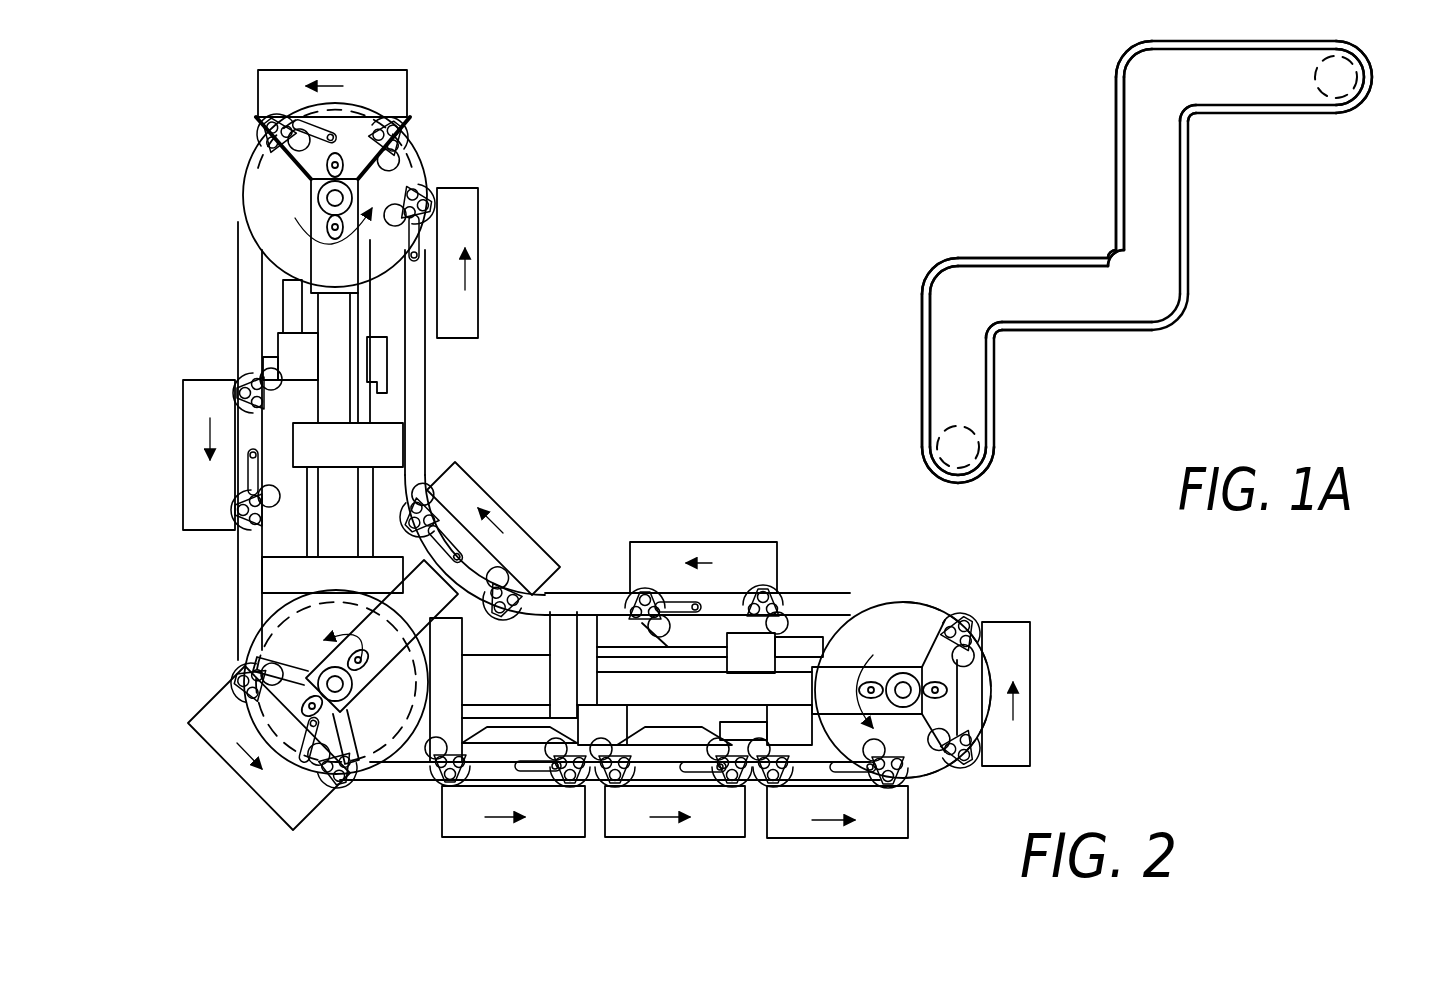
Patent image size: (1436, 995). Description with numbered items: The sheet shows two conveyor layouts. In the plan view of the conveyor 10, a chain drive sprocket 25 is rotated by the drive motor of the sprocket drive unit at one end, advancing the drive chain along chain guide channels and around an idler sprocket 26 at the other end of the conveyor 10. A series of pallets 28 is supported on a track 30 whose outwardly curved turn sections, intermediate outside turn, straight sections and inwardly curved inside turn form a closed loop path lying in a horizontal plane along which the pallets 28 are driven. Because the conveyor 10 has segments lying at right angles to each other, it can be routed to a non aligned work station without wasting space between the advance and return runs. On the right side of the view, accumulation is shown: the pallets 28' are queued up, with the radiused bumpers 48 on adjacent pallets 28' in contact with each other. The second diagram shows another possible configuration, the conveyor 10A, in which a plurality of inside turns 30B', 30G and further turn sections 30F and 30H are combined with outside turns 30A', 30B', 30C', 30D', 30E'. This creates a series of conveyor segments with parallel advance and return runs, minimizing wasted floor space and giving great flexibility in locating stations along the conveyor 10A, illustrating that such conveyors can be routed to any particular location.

In FIG. 2, the conveyor 10 is at (195, 250).
In FIG. 1A, the conveyor 10A is at (912, 450).
In FIG. 2, the chain drive sprocket 25 is at (260, 177).
In FIG. 2, the idler sprocket 26 is at (907, 613).
In FIG. 2, the pallets 28 is at (635, 450).
In FIG. 2, the pallets 28' is at (664, 808).
In FIG. 2, the track 30 is at (245, 613).
In FIG. 1A, the outside turn 30A' is at (1012, 477).
In FIG. 1A, the inside turn / outside turn 30B' is at (914, 317).
In FIG. 1A, the outside turn 30C' is at (1140, 294).
In FIG. 1A, the outside turn 30D' is at (1375, 109).
In FIG. 1A, the outside turn 30E' is at (1070, 145).
In FIG. 1A, the belt corner 30F is at (1190, 122).
In FIG. 1A, the inside turn 30G is at (1112, 252).
In FIG. 1A, the belt corner 30H is at (1000, 332).
In FIG. 2, the radiused bumpers 48 is at (585, 780).